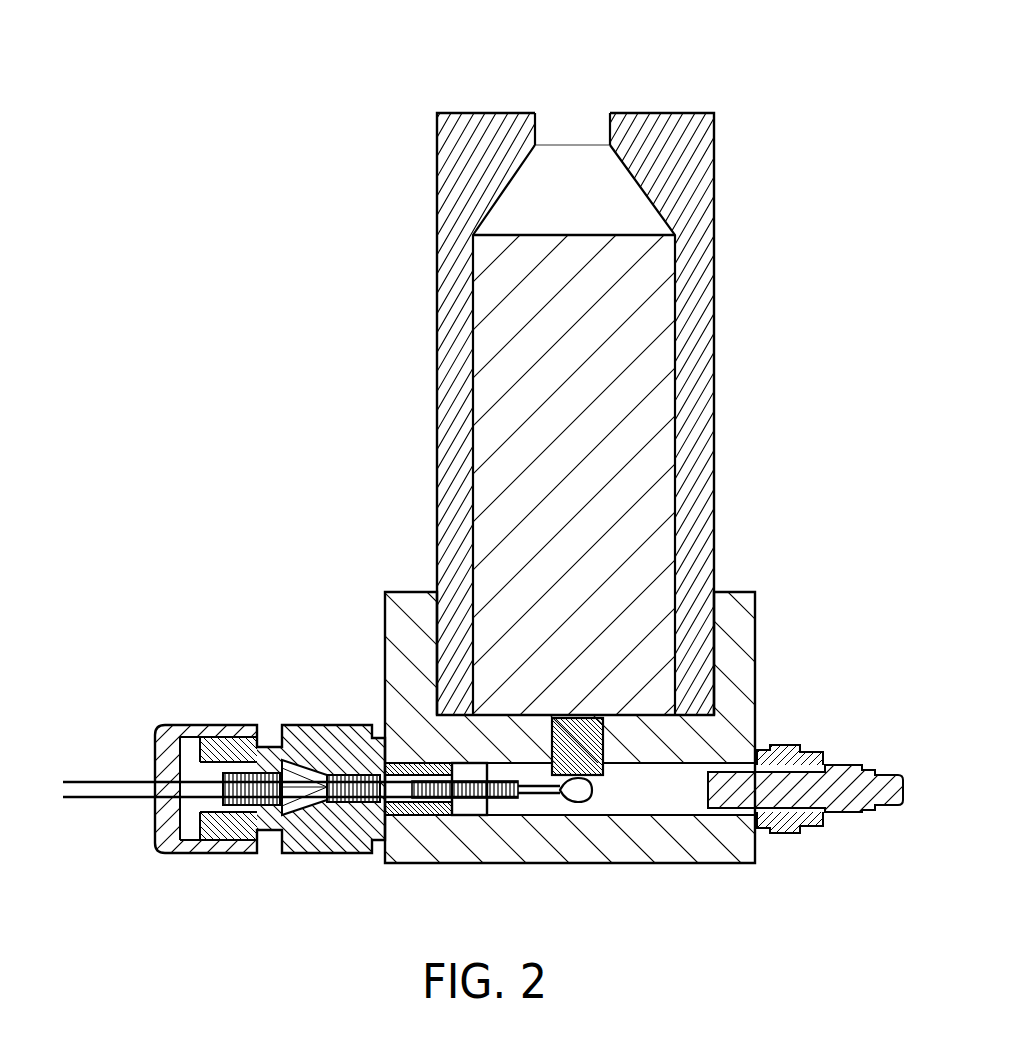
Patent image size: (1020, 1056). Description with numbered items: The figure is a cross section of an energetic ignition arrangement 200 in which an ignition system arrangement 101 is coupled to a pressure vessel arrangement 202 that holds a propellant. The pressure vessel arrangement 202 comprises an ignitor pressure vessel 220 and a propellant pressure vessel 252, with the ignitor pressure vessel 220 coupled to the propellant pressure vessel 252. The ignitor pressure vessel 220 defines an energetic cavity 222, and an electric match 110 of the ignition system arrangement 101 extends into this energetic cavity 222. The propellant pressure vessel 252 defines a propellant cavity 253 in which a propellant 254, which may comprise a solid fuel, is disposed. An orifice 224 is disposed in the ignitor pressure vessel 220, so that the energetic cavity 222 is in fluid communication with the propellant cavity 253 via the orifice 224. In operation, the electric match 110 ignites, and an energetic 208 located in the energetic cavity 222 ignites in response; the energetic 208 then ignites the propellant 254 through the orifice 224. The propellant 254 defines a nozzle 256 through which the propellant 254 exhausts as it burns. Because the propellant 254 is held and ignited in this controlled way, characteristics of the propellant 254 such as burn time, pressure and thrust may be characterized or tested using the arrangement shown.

The energetic ignition arrangement 200 is at (523, 487).
The pressure vessel arrangement 202 is at (530, 486).
The ignition system arrangement 101 is at (298, 756).
The electric match 110 is at (556, 812).
The energetic 208 is at (593, 781).
The ignitor pressure vessel 220 is at (735, 698).
The energetic cavity 222 is at (667, 783).
The orifice 224 is at (597, 720).
The propellant pressure vessel 252 is at (692, 377).
The propellant cavity 253 is at (675, 407).
The propellant 254 is at (605, 478).
The nozzle 256 is at (633, 165).